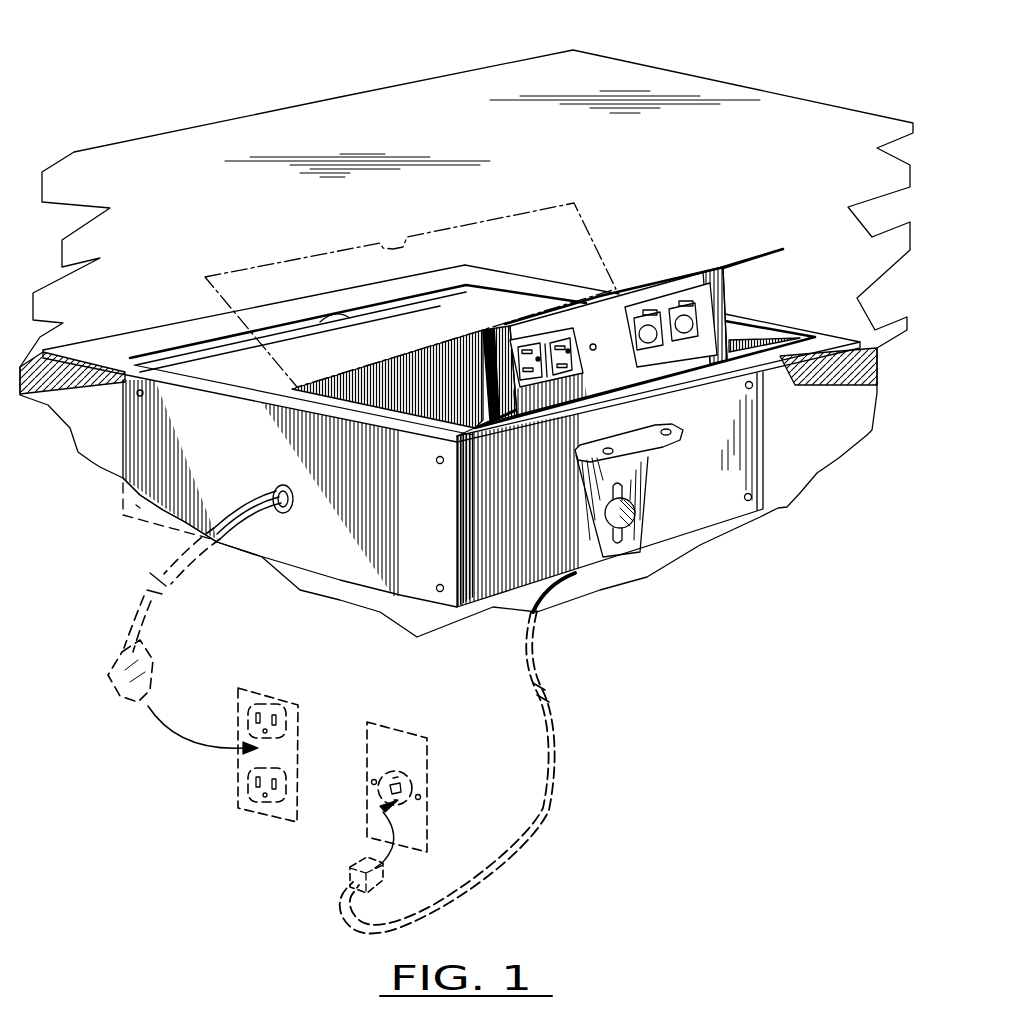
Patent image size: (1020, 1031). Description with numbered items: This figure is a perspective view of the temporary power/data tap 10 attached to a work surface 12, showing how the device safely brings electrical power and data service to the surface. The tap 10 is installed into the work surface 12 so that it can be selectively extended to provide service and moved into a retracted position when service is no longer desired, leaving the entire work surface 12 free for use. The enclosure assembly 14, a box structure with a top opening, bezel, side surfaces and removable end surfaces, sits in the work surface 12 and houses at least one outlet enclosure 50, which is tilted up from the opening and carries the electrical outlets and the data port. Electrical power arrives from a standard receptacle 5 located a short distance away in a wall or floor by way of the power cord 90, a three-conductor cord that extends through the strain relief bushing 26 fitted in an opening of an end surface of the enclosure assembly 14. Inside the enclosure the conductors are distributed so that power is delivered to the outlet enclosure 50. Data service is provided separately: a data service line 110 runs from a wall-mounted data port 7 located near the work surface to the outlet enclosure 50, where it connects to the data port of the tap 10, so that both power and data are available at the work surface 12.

The temporary power/data tap 10 is at (336, 233).
The work surface 12 is at (699, 72).
The enclosure assembly 14 is at (342, 570).
The strain relief bushing 26 is at (281, 514).
The outlet enclosure 50 is at (671, 268).
The power cord 90 is at (120, 628).
The standard receptacle 5 is at (240, 770).
The communication wall jack 7 is at (366, 737).
The data service line 110 is at (520, 842).